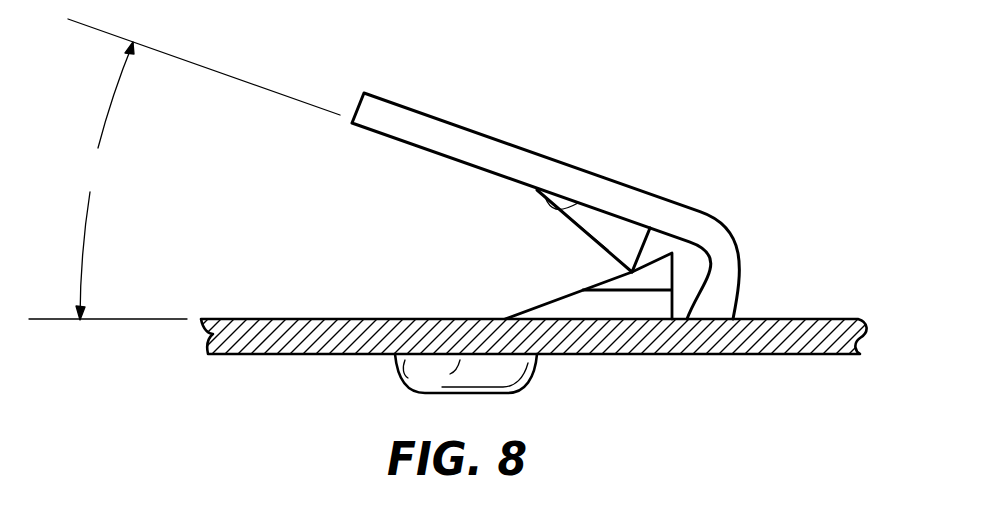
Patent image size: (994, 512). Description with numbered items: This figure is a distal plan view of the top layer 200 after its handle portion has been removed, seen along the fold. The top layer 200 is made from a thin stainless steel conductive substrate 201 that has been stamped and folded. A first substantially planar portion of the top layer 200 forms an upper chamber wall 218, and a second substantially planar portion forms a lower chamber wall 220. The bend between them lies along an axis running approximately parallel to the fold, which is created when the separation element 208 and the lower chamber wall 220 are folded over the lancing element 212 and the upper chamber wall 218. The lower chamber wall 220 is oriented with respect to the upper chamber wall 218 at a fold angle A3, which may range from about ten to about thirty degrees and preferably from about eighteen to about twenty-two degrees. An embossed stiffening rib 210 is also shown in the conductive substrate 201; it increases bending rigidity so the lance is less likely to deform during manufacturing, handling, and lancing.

The top layer 200 is at (703, 98).
The conductive substrate 201 is at (845, 319).
The separation element 208 is at (612, 244).
The stiffening rib 210 is at (537, 364).
The lancing element 212 is at (610, 280).
The upper chamber wall 218 is at (563, 318).
The lower chamber wall 220 is at (537, 191).
The fold angle A3 is at (184, 169).